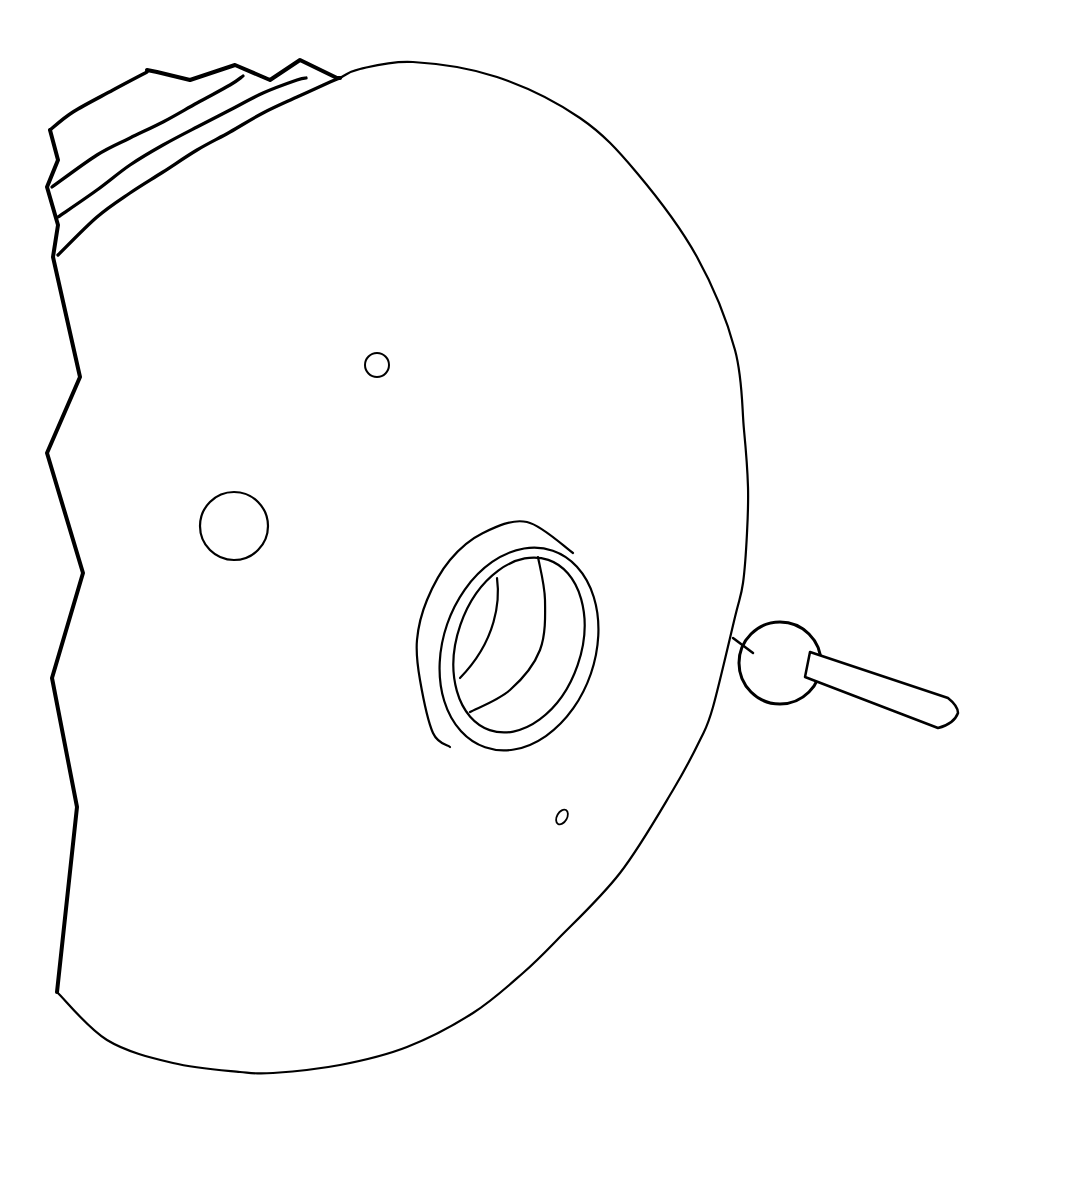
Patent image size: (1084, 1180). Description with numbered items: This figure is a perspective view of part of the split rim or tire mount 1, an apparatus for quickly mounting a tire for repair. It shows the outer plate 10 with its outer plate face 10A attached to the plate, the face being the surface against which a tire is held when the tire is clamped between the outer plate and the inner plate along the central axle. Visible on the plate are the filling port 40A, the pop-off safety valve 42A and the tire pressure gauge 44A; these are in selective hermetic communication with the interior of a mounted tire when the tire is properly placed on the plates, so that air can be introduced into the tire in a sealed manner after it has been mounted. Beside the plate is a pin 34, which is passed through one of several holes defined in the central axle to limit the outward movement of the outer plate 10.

The tire mount 1 is at (782, 163).
The outer plate 10 is at (733, 350).
The outer plate face 10A is at (637, 173).
The pin 34 is at (883, 688).
The filling port 40A is at (222, 558).
The pop-off safety valve 42A is at (386, 356).
The tire pressure gauge 44A is at (567, 825).